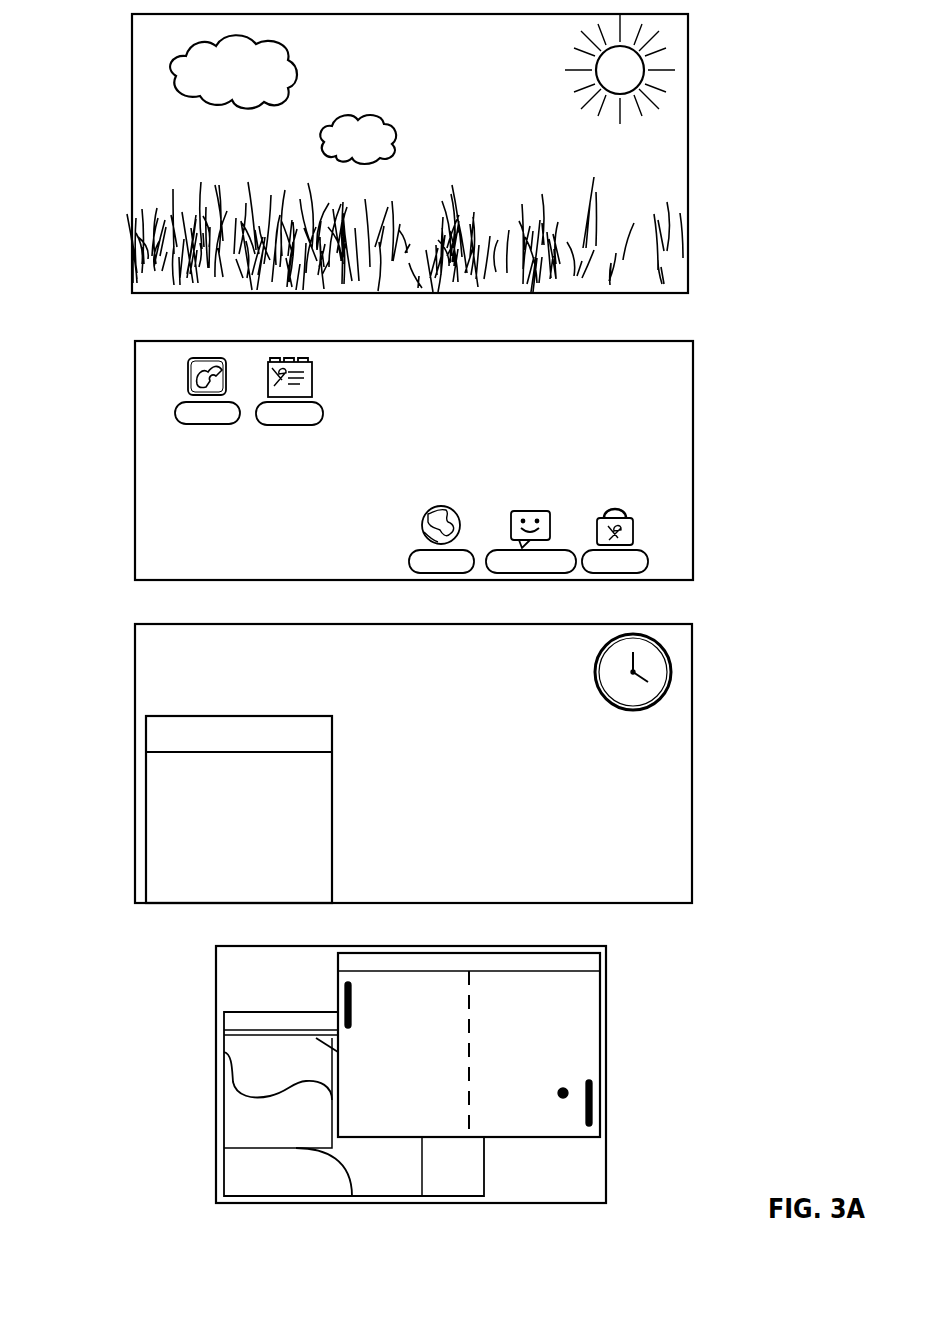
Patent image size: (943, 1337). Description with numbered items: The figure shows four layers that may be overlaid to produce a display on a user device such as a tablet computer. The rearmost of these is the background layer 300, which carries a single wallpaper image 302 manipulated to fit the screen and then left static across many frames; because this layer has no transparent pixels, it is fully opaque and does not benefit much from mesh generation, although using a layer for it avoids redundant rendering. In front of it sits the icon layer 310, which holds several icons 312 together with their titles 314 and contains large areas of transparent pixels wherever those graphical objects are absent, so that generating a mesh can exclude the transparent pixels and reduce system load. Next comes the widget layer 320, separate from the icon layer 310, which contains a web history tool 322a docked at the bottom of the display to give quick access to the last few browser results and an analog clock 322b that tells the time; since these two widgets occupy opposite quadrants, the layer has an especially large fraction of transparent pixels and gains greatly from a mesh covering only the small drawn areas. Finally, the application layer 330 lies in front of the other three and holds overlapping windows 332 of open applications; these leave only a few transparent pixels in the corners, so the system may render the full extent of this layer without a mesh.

The background layer 300 is at (132, 138).
The image 302 is at (431, 75).
The icon layer 310 is at (135, 425).
The icons 312 is at (312, 370).
The titles 314 is at (323, 413).
The widget layer 320 is at (135, 715).
The web history tool 322a is at (333, 805).
The analog clock 322b is at (596, 674).
The application layer 330 is at (216, 1003).
The windows 332 is at (484, 1148).